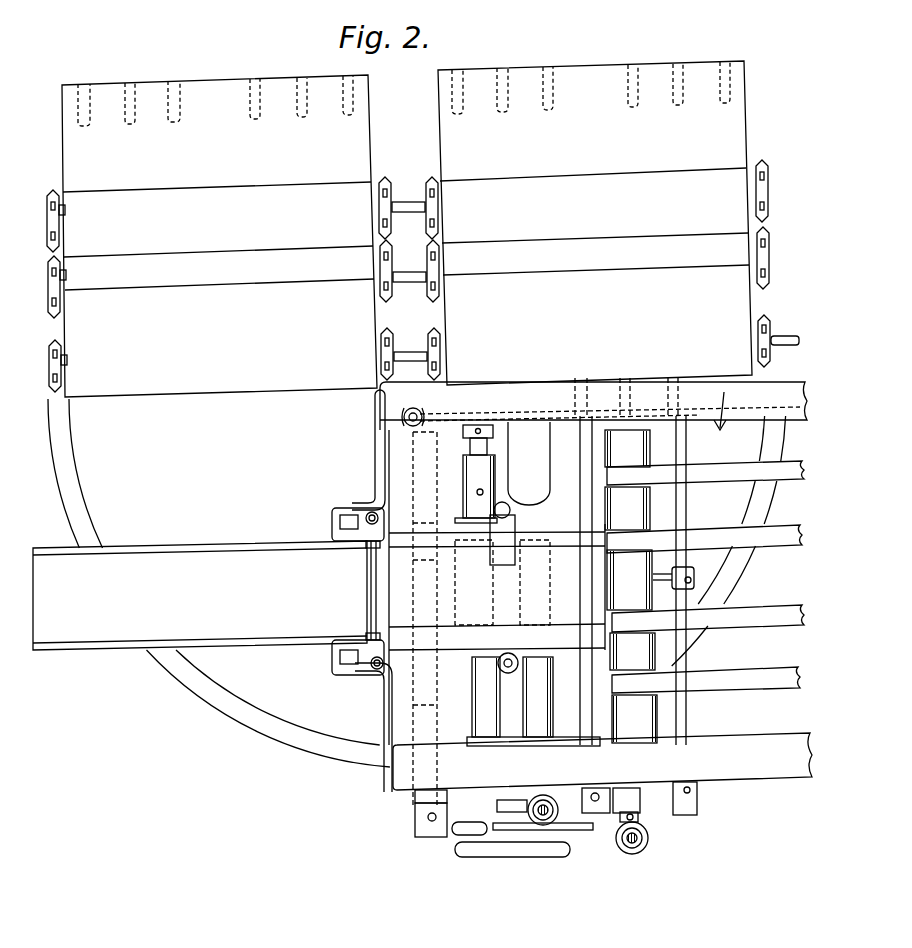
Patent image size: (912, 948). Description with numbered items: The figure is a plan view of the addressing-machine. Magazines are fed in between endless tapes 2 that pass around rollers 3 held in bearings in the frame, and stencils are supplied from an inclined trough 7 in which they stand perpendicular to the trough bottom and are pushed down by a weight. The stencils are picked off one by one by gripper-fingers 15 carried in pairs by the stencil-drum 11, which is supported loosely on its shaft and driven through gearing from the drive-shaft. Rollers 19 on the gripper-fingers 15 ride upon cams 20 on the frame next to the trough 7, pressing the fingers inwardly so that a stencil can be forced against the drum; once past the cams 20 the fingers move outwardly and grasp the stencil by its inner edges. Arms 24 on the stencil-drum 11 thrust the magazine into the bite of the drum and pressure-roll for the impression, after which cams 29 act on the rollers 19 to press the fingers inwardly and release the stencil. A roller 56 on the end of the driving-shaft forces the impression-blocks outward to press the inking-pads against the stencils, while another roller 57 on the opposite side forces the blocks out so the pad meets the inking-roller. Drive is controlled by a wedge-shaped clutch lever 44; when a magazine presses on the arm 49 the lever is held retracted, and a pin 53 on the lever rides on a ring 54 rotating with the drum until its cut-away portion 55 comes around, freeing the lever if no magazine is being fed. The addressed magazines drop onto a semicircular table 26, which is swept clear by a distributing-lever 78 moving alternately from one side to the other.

The endless tapes 2 is at (767, 530).
The rollers 3 is at (653, 557).
The inclined trough 7 is at (200, 595).
The stencil-drum 11 is at (383, 580).
The gripper-fingers 15 is at (332, 533).
The rollers 19 is at (363, 518).
The cams 20 is at (370, 513).
The arms 24 is at (595, 499).
The table 26 is at (417, 583).
The cams 29 is at (527, 505).
The clutch lever 44 is at (582, 817).
The arm 49 is at (685, 578).
The pin 53 is at (577, 813).
The ring 54 is at (497, 803).
The cut-away portion 55 is at (562, 807).
The roller 56 is at (550, 592).
The roller 57 is at (455, 610).
The distributing-lever 78 is at (482, 410).